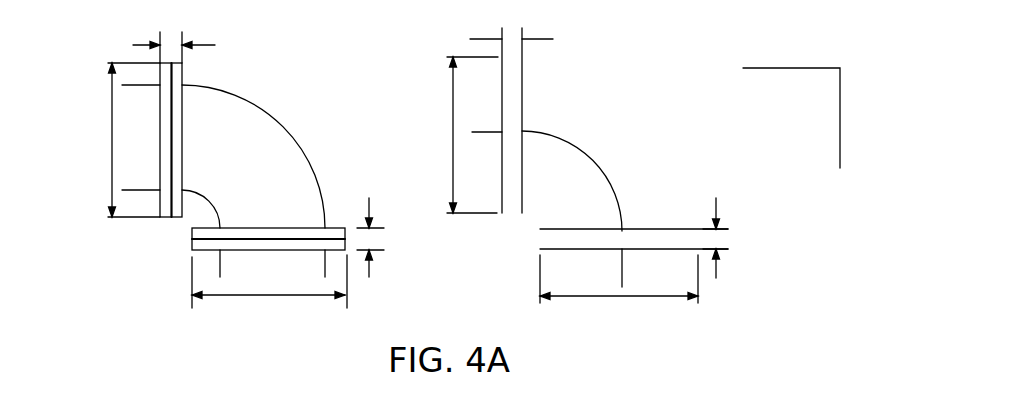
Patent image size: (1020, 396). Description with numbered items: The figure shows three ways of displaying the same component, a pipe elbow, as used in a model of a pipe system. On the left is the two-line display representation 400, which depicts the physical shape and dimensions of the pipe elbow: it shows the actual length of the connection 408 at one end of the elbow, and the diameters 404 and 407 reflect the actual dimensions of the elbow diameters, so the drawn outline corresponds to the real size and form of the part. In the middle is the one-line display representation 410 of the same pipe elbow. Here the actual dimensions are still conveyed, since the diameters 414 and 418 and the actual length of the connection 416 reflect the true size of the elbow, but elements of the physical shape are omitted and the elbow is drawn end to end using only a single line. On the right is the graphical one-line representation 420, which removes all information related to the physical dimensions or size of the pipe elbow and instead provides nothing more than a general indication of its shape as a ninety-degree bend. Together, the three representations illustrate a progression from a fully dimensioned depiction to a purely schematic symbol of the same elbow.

The 2-line display representation 400 is at (257, 57).
The diameter 404 is at (72, 137).
The diameter 407 is at (310, 297).
The connection 408 is at (382, 252).
The 1-line display representation 410 is at (599, 97).
The diameter 414 is at (408, 128).
The connection 416 is at (672, 298).
The diameter 418 is at (745, 252).
The graphical 1-line representation 420 is at (778, 67).